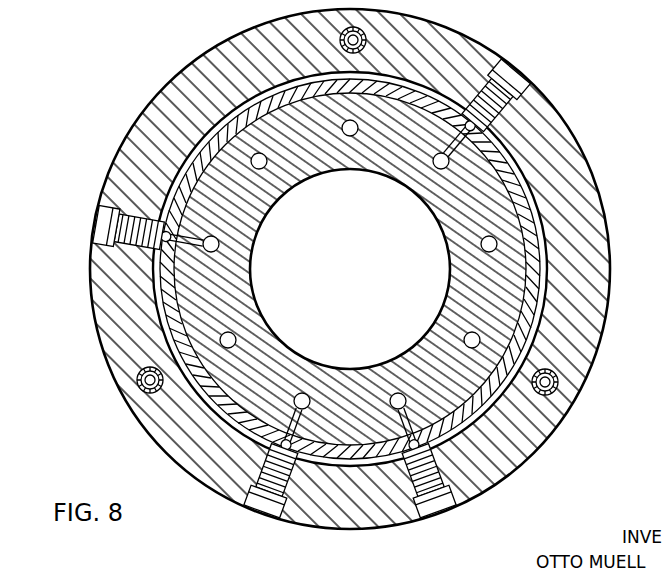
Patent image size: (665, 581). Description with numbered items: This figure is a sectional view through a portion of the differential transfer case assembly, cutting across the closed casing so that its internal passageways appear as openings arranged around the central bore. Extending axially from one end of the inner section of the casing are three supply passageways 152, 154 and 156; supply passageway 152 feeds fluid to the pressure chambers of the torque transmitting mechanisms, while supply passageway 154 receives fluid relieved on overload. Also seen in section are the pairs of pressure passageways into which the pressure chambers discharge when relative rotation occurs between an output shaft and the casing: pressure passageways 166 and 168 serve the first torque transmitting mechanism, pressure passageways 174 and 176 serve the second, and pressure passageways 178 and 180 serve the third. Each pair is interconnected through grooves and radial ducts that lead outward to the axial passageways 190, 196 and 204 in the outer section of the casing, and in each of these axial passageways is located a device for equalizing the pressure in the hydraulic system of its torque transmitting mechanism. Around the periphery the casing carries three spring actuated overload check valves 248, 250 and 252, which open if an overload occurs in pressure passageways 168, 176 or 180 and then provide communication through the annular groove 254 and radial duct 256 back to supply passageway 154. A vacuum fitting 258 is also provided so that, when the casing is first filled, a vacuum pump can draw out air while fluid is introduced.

The supply passageway 152 is at (350, 136).
The supply passageway 154 is at (465, 336).
The supply passageway 156 is at (234, 335).
The pressure passageway 166 is at (481, 245).
The pressure passageway 168 is at (396, 393).
The pressure passageway 174 is at (303, 393).
The pressure passageway 176 is at (219, 245).
The pressure passageway 178 is at (264, 168).
The pressure passageway 180 is at (436, 168).
The axial passageway 190 is at (143, 392).
The axial passageway 196 is at (366, 42).
The axial passage 204 is at (560, 388).
The overload check valve 248 is at (440, 508).
The overload check valve 250 is at (105, 228).
The overload check valve 252 is at (518, 80).
The annular groove 254 is at (546, 440).
The radial duct 256 is at (505, 350).
The vacuum fitting 258 is at (266, 512).